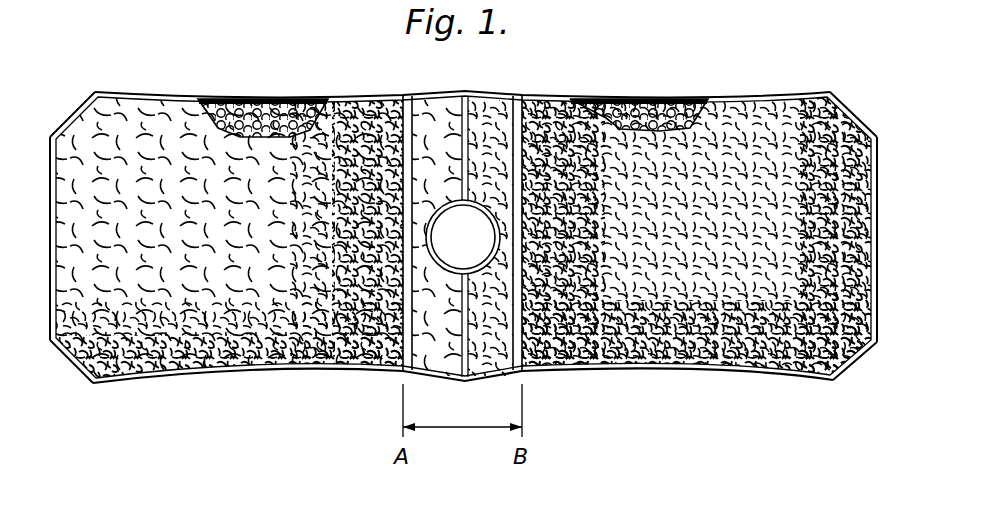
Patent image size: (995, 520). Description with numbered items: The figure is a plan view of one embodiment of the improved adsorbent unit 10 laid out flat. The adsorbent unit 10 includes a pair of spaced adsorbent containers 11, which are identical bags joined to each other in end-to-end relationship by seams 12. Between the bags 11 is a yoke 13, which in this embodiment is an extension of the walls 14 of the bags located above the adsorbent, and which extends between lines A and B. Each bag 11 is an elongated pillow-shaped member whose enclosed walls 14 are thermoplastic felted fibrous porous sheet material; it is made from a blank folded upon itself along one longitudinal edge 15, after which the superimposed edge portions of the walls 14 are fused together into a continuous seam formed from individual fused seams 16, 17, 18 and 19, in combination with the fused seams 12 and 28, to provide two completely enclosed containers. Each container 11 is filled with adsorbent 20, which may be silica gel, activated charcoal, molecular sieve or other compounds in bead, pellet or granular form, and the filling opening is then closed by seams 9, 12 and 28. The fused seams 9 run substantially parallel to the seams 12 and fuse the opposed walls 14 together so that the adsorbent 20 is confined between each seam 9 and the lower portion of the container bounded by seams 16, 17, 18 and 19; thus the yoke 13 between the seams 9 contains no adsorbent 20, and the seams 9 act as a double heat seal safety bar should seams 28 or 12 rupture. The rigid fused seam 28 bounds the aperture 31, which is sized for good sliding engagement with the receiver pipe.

The fused seams 9 is at (399, 369).
The adsorbent unit 10 is at (245, 84).
The adsorbent containers 11 is at (116, 89).
The seams 12 is at (467, 122).
The yoke 13 is at (425, 76).
The walls 14 is at (188, 98).
The longitudinal edge 15 is at (345, 98).
The fused seam 16 is at (70, 117).
The fused seam 17 is at (50, 250).
The fused seam 18 is at (72, 362).
The fused seam 19 is at (228, 378).
The adsorbent 20 is at (300, 98).
The fused seam 28 is at (434, 250).
The aperture 31 is at (480, 214).